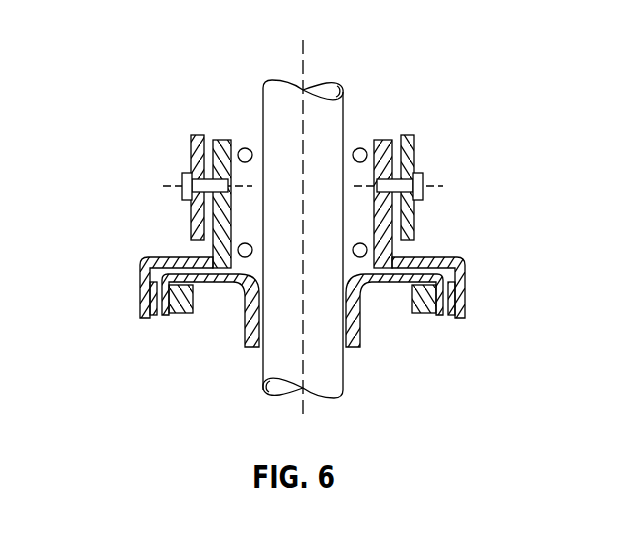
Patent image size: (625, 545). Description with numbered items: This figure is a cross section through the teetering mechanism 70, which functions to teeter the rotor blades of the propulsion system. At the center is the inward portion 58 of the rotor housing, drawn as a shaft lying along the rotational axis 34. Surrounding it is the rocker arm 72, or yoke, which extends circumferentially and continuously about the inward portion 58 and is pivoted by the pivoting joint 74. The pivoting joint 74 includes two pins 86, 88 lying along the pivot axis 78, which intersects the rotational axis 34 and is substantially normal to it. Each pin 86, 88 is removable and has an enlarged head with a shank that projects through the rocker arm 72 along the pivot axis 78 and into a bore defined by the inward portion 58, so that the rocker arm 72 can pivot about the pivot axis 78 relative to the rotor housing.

The rotational axis 34 is at (303, 65).
The teetering mechanism 70 is at (161, 184).
The pin 88 is at (182, 187).
The inward portion of the rotor housing 58 is at (213, 258).
The pivoting joint 74 is at (424, 188).
The pivot axis 78 is at (438, 187).
The pin 86 is at (424, 196).
The rocker arm 72 is at (414, 225).